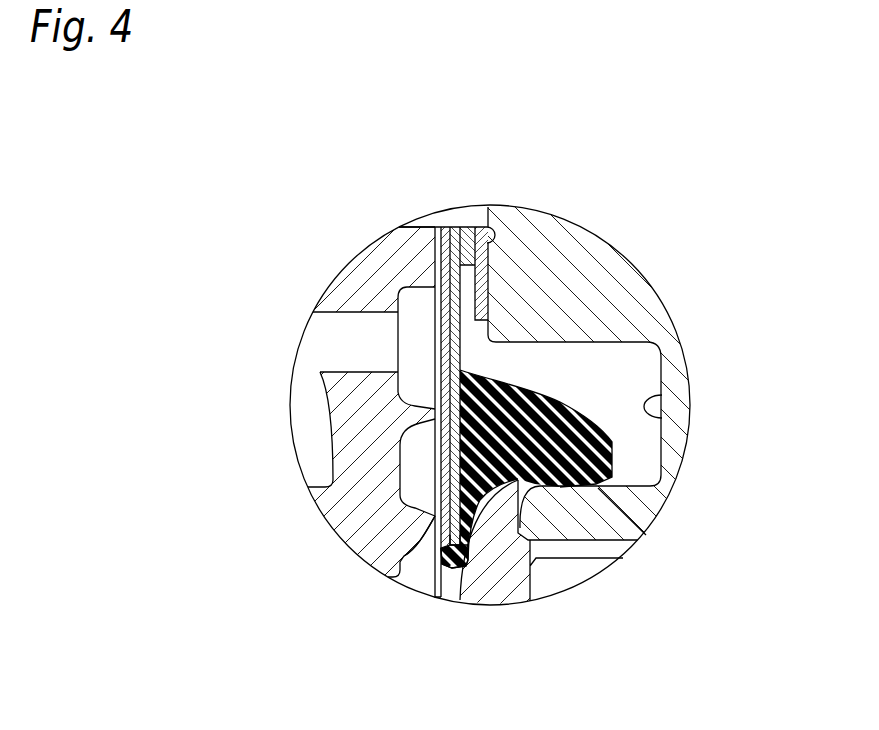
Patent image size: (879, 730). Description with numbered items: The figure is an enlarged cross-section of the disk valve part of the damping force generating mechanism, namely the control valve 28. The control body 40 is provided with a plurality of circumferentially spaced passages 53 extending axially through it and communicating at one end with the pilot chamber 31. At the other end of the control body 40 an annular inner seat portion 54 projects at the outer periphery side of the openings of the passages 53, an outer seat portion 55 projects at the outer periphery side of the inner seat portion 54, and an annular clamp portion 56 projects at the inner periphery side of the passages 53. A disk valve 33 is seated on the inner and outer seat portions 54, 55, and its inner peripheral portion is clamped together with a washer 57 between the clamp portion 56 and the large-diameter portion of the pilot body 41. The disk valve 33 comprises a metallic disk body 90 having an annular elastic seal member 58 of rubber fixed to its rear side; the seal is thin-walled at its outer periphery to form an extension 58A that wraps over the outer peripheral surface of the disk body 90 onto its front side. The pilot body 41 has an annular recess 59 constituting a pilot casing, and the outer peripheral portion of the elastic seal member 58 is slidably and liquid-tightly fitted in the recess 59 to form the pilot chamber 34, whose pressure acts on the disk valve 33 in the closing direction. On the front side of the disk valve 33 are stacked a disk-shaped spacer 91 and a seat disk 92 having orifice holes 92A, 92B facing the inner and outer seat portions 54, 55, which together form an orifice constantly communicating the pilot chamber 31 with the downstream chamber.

The control valve 28 is at (538, 176).
The pilot chamber 31 is at (305, 396).
The disk valve 33 is at (458, 567).
The pilot chamber 34 is at (623, 375).
The control body 40 is at (363, 498).
The pilot body 41 is at (583, 255).
The passages 53 is at (340, 346).
The inner seat portion 54 is at (418, 422).
The outer seat portion 55 is at (432, 525).
The clamp portion 56 is at (431, 250).
The washer 57 is at (470, 224).
The elastic seal member 58 is at (612, 440).
The extension 58A is at (467, 582).
The annular recess 59 is at (663, 395).
The disk body 90 is at (455, 224).
The spacer 91 is at (447, 224).
The seat disk 92 is at (437, 224).
The orifice hole 92A is at (500, 392).
The orifice hole 92B is at (467, 548).